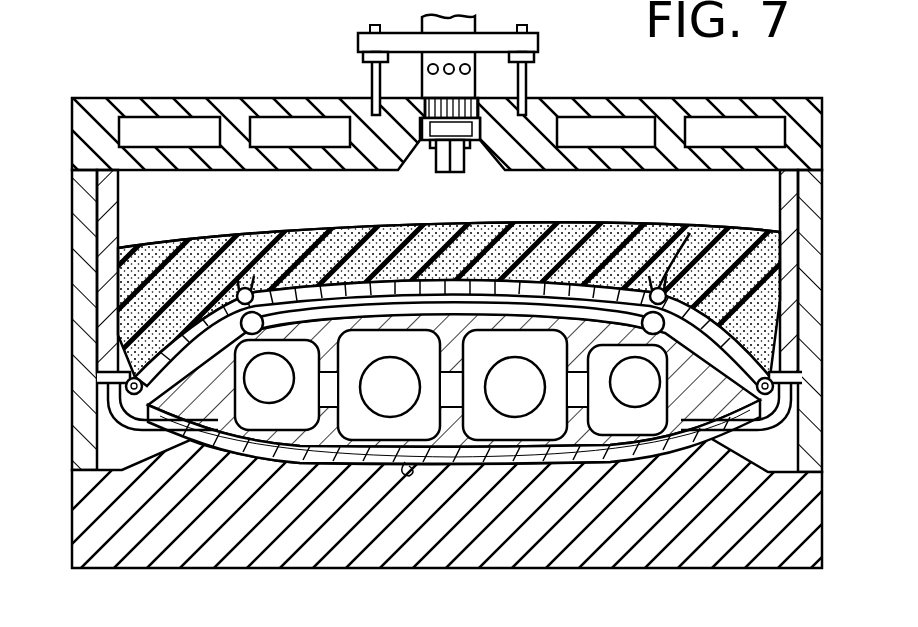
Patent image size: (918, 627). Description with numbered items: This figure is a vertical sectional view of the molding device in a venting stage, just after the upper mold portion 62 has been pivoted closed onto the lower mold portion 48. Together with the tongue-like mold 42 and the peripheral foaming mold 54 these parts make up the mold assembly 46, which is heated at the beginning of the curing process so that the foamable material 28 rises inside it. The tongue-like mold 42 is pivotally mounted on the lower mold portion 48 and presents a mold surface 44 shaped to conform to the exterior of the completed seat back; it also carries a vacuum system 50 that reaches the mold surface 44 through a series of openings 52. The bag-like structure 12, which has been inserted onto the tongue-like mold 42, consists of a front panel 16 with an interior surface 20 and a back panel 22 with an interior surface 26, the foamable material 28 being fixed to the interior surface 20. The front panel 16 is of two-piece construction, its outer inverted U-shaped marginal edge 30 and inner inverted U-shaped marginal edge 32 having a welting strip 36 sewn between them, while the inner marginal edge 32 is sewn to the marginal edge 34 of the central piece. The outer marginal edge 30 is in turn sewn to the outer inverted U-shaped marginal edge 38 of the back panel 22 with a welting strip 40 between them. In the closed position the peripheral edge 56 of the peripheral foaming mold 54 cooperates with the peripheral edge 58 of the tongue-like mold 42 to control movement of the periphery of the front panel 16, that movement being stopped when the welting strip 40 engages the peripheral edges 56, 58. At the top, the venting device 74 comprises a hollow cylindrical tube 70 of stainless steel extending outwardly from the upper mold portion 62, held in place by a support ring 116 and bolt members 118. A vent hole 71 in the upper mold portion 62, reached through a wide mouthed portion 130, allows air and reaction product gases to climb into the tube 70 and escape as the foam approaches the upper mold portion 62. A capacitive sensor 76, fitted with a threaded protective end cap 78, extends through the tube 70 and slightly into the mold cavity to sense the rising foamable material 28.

The bag-like structure 12 is at (772, 438).
The front panel 16 is at (345, 288).
The interior surface 20 is at (275, 246).
The back panel 22 is at (345, 452).
The interior surface 26 is at (405, 470).
The foamable material 28 is at (140, 246).
The outer inverted U-shaped marginal edge 30 is at (125, 362).
The inner inverted U-shaped marginal edge 32 is at (782, 276).
The marginal edge 34 is at (655, 250).
The welting strip 36 is at (728, 235).
The outer inverted U-shaped marginal edge 38 is at (115, 403).
The welting strip 40 is at (110, 380).
The tongue-like mold 42 is at (485, 458).
The mold surface 44 is at (585, 223).
The mold assembly 46 is at (203, 62).
The lower mold portion 48 is at (165, 560).
The vacuum system 50 is at (496, 359).
The openings 52 is at (363, 303).
The peripheral foaming mold 54 is at (100, 275).
The peripheral edge 56 is at (795, 372).
The peripheral edge 58 is at (805, 405).
The upper mold portion 62 is at (95, 132).
The hollow cylindrical tube 70 is at (470, 80).
The vent hole 71 is at (423, 98).
The venting device 74 is at (575, 53).
The capacitive sensor 76 is at (425, 160).
The threaded protective end cap 78 is at (445, 172).
The support ring 116 is at (538, 38).
The bolt members 118 is at (372, 70).
The wide mouthed portion 130 is at (482, 160).